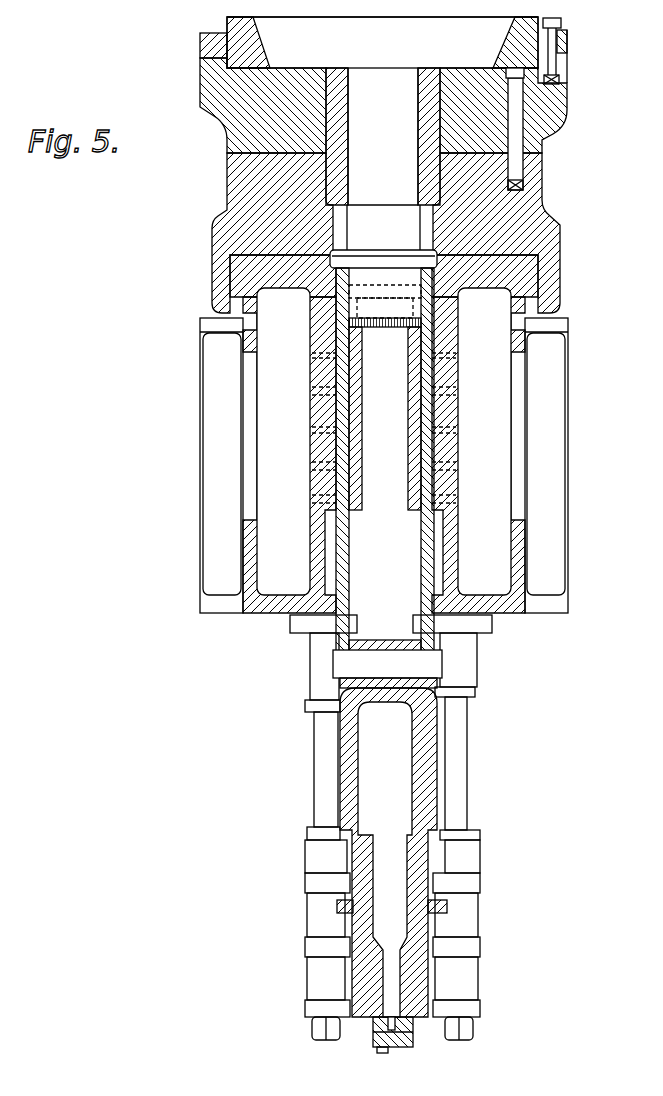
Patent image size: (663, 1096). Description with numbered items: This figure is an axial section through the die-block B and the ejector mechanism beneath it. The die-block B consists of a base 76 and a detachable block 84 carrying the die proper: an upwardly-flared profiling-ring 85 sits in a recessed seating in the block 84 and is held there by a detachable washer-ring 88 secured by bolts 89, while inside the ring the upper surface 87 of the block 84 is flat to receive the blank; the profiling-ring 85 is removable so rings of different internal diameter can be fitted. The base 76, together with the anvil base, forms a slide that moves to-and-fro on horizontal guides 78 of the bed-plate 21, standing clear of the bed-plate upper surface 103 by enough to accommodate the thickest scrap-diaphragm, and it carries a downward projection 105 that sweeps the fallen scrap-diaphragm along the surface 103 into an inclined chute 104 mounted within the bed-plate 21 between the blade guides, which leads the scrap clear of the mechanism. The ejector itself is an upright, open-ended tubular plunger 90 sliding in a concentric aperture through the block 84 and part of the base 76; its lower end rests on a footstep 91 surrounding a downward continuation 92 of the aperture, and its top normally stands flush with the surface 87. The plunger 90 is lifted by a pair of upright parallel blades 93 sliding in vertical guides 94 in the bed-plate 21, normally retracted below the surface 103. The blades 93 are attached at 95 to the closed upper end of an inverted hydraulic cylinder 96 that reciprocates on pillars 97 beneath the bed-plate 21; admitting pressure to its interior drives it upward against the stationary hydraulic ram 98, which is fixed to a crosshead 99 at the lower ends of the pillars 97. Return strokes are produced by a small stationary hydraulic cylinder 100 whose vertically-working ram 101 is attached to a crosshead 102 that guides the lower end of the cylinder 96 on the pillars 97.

The die-block B is at (382, 9).
The profiling-ring 85 is at (262, 56).
The washer-ring 88 is at (214, 27).
The block 84 is at (216, 128).
The base of the die-block 76 is at (226, 197).
The upper surface of the block 87 is at (463, 68).
The bolt 89 is at (562, 48).
The footstep 91 is at (346, 198).
The tubular plunger 90 is at (363, 73).
The downward continuation of the central aperture 92 is at (383, 227).
The horizontal guides 78 is at (232, 275).
The vertical guides 94 is at (312, 447).
The upper surface of the bed-plate 103 is at (330, 312).
The downward projection 105 is at (397, 260).
The ejector blades 93 is at (422, 552).
The inclined chute 104 is at (388, 331).
The bed-plate 21 is at (208, 457).
The small stationary hydraulic cylinder 100 is at (457, 631).
The attachment of blades to cylinder 95 is at (345, 665).
The inverted hydraulic cylinder 96 is at (340, 730).
The hydraulic ram 98 is at (385, 790).
The pillars 97 is at (320, 760).
The vertically-working ram 101 is at (457, 758).
The crosshead 102 is at (470, 853).
The crosshead 99 is at (324, 979).